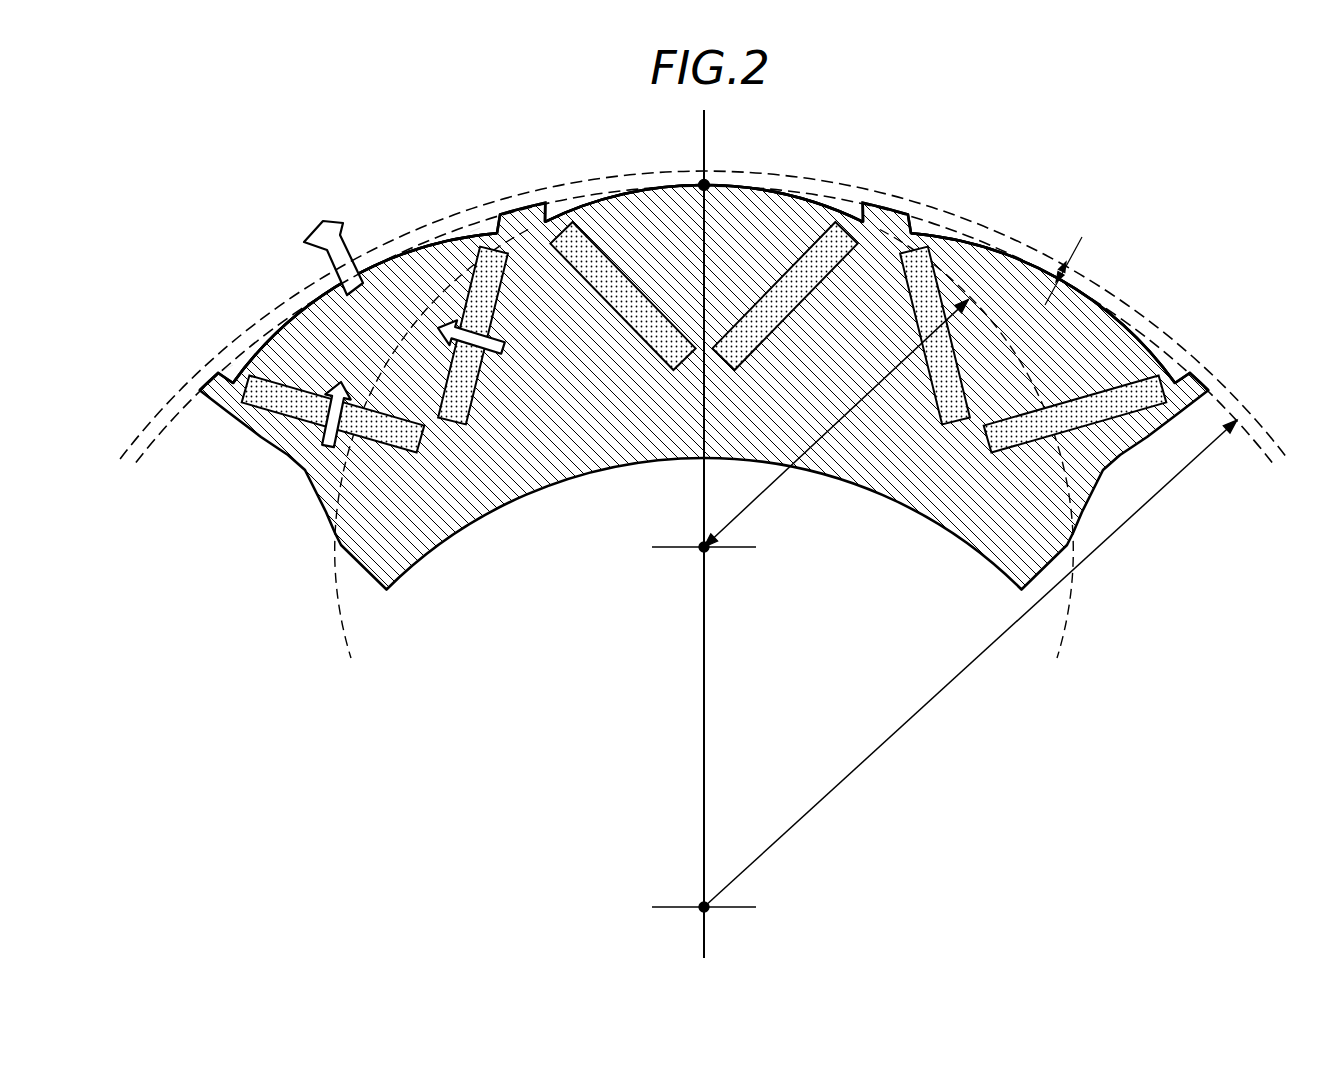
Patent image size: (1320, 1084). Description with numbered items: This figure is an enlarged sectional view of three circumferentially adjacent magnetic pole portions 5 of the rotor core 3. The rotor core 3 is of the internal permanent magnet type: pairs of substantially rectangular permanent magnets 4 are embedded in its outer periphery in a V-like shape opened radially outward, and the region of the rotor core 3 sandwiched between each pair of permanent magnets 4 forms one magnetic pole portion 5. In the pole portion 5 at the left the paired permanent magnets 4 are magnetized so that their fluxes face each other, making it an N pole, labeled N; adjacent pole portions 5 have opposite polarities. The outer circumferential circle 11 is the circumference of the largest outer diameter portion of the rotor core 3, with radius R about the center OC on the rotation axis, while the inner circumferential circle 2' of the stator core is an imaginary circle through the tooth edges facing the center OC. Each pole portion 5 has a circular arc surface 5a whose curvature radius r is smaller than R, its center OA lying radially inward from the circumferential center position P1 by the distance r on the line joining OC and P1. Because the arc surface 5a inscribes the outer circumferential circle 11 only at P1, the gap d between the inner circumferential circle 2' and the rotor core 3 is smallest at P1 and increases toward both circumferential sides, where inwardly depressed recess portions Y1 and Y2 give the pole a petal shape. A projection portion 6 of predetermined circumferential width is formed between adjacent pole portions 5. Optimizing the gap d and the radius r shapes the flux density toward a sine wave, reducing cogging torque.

The inner circumferential circle of the stator core 2' is at (704, 369).
The rotor core 3 is at (528, 498).
The permanent magnet 4 is at (598, 265).
The magnetic pole portion 5 is at (313, 343).
The circular arc surface 5a is at (430, 243).
The projection portion 6 is at (520, 218).
The outer circumferential circle 11 is at (152, 433).
The circumferential center position P1 is at (708, 184).
The center of the circular arc shape OA is at (704, 563).
The center OC is at (704, 924).
The radius of the outer circumferential circle R is at (970, 663).
The curvature radius r is at (836, 423).
The gap d is at (1069, 257).
The N pole N is at (404, 334).
The recess portion Y1 is at (230, 372).
The recess portion Y2 is at (476, 230).